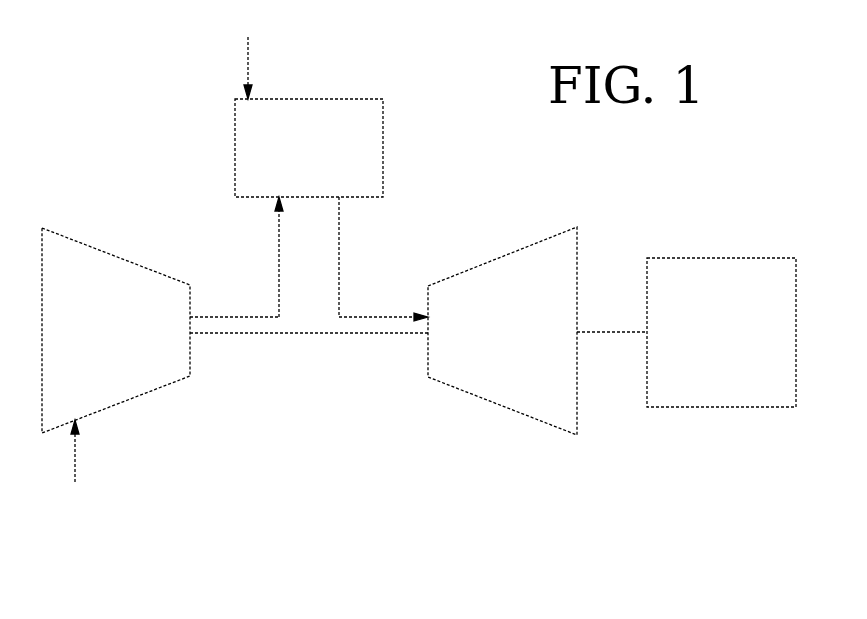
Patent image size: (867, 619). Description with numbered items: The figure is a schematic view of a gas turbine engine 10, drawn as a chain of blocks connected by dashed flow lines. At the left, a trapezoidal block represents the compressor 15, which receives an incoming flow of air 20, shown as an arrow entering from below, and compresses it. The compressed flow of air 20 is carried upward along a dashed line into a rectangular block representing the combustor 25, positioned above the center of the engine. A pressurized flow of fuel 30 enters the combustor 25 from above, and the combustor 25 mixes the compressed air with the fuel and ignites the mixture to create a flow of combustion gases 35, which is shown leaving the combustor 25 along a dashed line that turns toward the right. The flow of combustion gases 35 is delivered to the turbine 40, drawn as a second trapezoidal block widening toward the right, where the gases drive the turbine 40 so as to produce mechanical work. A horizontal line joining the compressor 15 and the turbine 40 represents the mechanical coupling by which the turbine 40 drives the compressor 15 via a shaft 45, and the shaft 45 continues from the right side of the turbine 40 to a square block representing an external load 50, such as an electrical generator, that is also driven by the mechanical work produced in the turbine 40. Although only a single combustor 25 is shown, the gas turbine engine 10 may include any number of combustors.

The gas turbine engine 10 is at (85, 138).
The compressor 15 is at (130, 343).
The flow of air 20 is at (75, 460).
The combustor 25 is at (322, 158).
The flow of fuel 30 is at (249, 63).
The flow of combustion gases 35 is at (371, 317).
The turbine 40 is at (517, 342).
The shaft 45 is at (607, 332).
The external load 50 is at (736, 344).